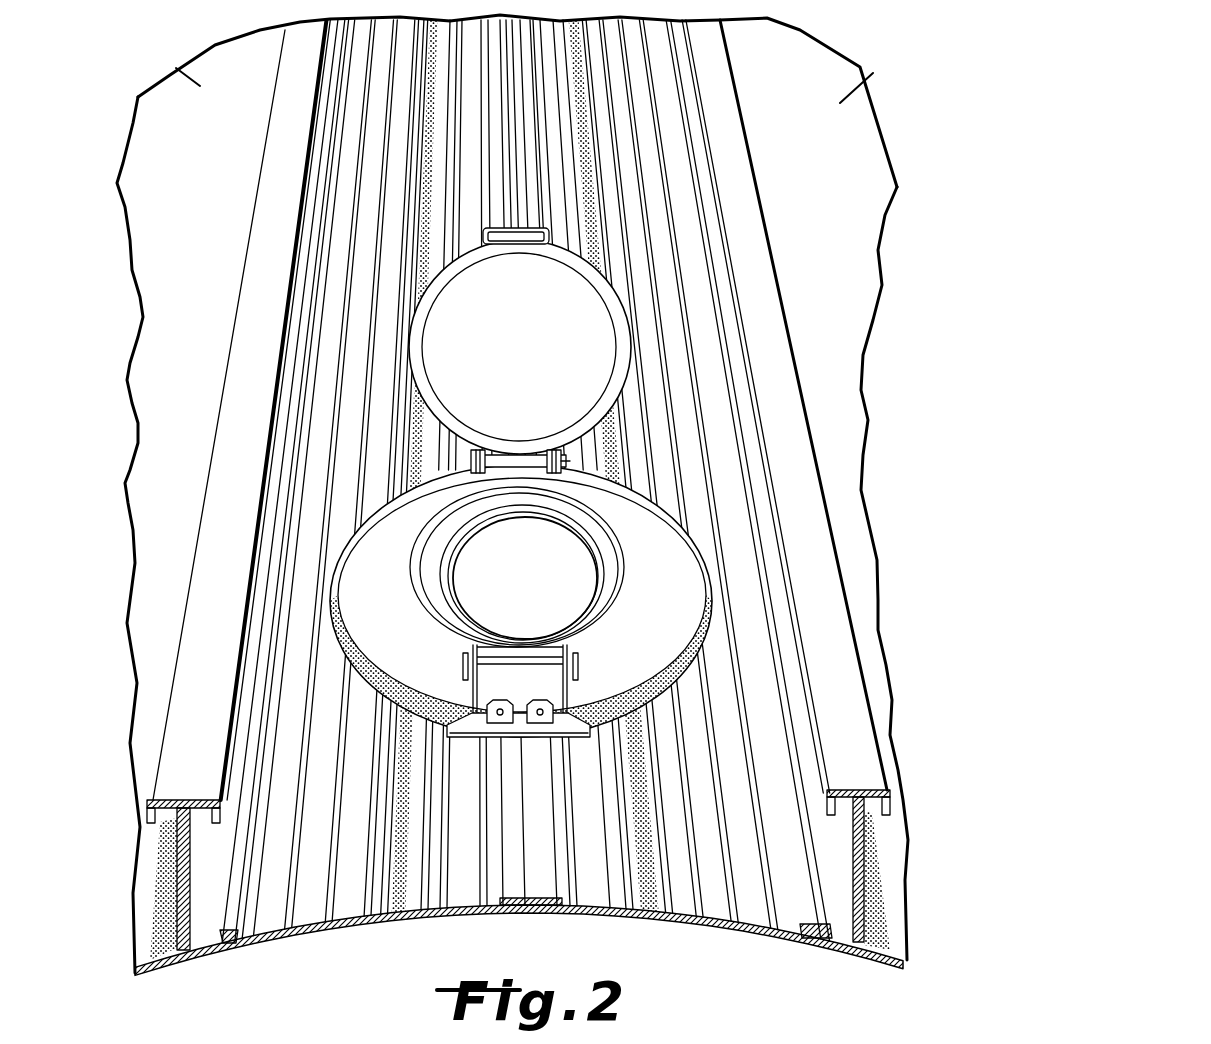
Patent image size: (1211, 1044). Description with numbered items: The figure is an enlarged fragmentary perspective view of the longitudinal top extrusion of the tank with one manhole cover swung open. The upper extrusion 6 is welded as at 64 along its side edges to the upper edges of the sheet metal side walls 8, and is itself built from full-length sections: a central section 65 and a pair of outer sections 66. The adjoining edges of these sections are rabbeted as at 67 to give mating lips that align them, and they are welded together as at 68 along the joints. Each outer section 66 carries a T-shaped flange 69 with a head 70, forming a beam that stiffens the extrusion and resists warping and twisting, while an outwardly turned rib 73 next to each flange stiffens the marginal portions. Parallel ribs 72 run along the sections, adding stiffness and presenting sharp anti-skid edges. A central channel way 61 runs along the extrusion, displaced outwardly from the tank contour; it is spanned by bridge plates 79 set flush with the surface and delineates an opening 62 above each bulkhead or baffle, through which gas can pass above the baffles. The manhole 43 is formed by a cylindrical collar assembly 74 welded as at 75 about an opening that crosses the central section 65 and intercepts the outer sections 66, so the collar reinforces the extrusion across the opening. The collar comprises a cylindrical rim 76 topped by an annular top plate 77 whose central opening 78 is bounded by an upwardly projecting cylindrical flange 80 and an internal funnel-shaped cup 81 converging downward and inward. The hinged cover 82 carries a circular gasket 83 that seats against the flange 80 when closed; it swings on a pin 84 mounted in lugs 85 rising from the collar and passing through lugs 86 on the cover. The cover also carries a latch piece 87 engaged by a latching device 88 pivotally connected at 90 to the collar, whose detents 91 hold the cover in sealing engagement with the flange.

The upper extrusion 6 is at (268, 220).
The side walls 8 is at (524, 80).
The manhole 43 is at (556, 598).
The central channel way 61 is at (510, 880).
The opening 62 is at (533, 903).
The welds 64 is at (168, 870).
The central section 65 is at (587, 897).
The outer sections 66 is at (302, 913).
The rabbets 67 is at (403, 927).
The welds 68 is at (393, 890).
The T-shaped flange 69 is at (188, 866).
The head 70 is at (217, 495).
The parallel ribs 72 is at (340, 745).
The outwardly turned rib 73 is at (262, 642).
The cylindrical collar assembly 74 is at (665, 556).
The weld 75 is at (700, 683).
The cylindrical rim 76 is at (372, 686).
The annular top plate 77 is at (670, 522).
The central opening 78 is at (517, 557).
The bridge plates 79 is at (507, 917).
The cylindrical flange 80 is at (407, 595).
The funnel-shaped cup 81 is at (433, 533).
The hinged cover 82 is at (519, 347).
The circular gasket 83 is at (440, 280).
The pin 84 is at (572, 462).
The lugs 85 is at (464, 447).
The lugs 86 is at (497, 452).
The latch piece 87 is at (543, 245).
The latching device 88 is at (573, 717).
The pivot connection 90 is at (478, 665).
The detents 91 is at (540, 702).